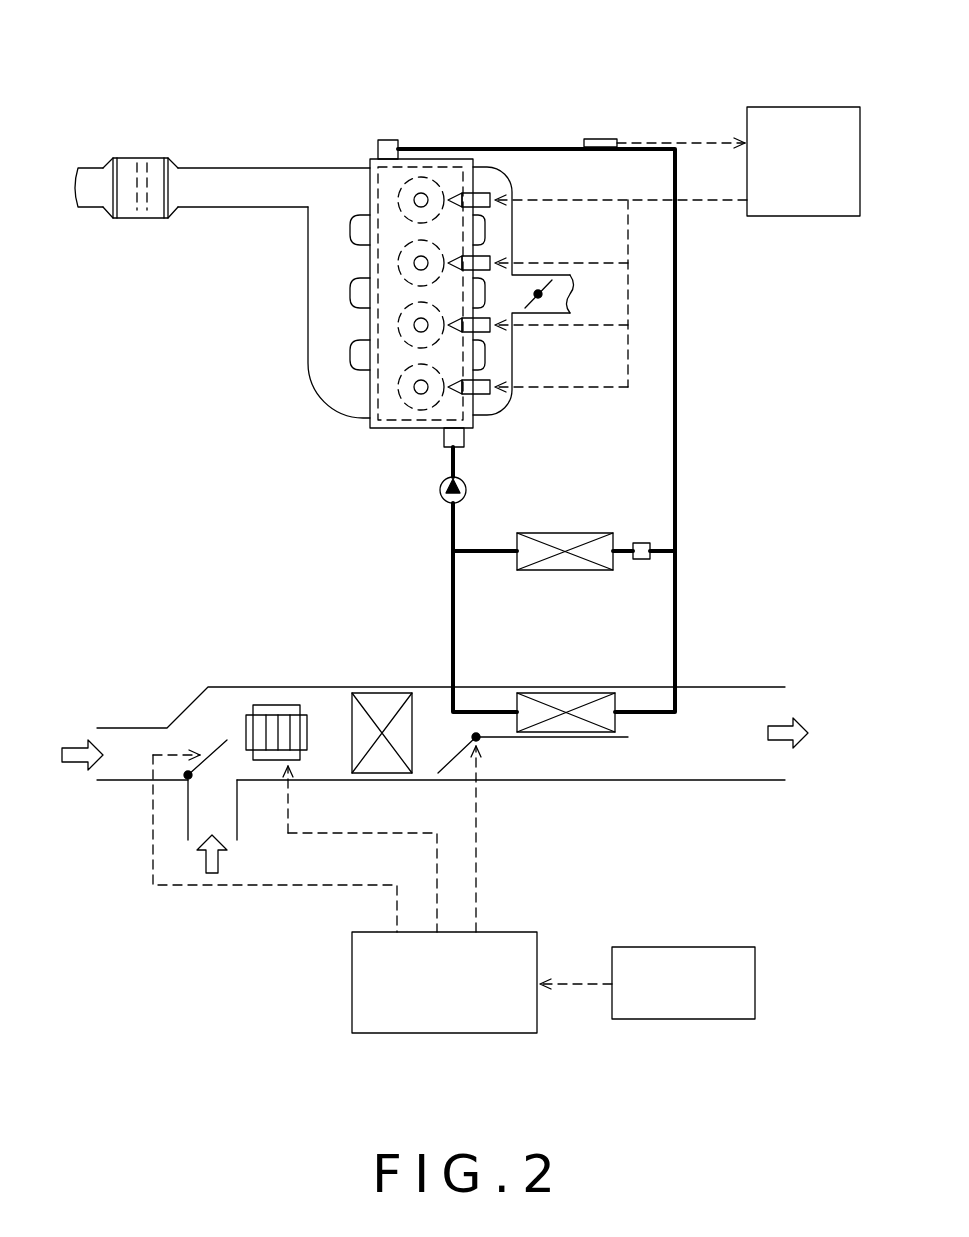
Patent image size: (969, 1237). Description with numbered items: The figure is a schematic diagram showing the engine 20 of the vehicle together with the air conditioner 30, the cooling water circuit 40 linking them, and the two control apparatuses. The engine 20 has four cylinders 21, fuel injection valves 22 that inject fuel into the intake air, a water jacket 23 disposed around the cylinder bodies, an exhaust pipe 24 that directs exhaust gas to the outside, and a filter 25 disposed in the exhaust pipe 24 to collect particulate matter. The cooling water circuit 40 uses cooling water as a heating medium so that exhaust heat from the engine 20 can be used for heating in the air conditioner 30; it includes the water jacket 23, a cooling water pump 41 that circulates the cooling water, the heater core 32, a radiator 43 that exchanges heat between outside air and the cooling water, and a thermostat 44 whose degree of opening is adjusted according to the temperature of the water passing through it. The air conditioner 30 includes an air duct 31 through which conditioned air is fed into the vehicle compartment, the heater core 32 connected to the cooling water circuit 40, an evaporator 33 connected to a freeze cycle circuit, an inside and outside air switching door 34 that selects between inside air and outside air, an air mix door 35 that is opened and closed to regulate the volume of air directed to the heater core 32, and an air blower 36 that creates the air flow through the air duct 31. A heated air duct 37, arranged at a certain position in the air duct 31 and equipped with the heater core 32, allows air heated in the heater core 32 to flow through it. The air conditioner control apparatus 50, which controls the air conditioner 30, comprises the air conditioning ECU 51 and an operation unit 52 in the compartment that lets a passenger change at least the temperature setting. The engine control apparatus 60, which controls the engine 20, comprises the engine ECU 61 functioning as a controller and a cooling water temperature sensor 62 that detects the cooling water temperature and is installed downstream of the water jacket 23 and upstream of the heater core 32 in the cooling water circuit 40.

The engine 20 is at (394, 124).
The cylinders 21 is at (412, 200).
The fuel injection valves 22 is at (500, 208).
The water jacket 23 is at (440, 165).
The exhaust pipe 24 is at (233, 200).
The filter 25 is at (143, 160).
The air conditioner 30 is at (288, 655).
The air duct 31 is at (698, 710).
The heater core 32 is at (563, 700).
The evaporator 33 is at (382, 700).
The inside and outside air switching door 34 is at (211, 744).
The air mix door 35 is at (448, 764).
The air blower 36 is at (270, 747).
The heated air duct 37 is at (626, 705).
The cooling water circuit 40 is at (696, 440).
The cooling water pump 41 is at (466, 490).
The radiator 43 is at (565, 570).
The thermostat 44 is at (641, 560).
The air conditioner control apparatus 50 is at (274, 1013).
The air conditioning ECU 51 is at (447, 1033).
The operation unit 52 is at (690, 1019).
The engine control apparatus 60 is at (748, 77).
The engine ECU 61 is at (818, 216).
The cooling water temperature sensor 62 is at (604, 139).